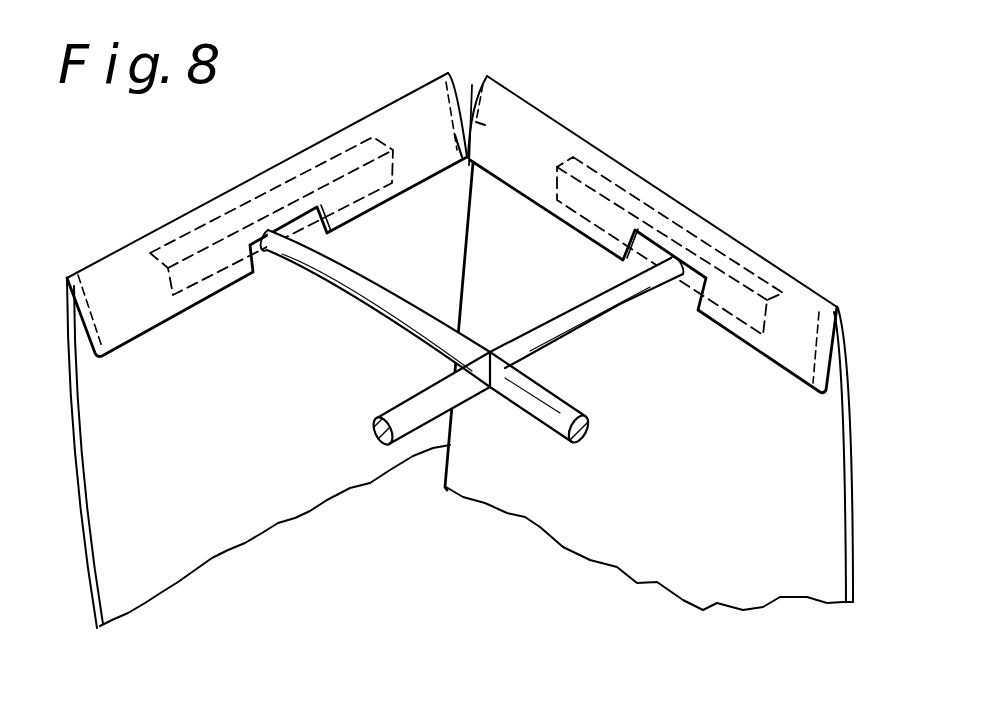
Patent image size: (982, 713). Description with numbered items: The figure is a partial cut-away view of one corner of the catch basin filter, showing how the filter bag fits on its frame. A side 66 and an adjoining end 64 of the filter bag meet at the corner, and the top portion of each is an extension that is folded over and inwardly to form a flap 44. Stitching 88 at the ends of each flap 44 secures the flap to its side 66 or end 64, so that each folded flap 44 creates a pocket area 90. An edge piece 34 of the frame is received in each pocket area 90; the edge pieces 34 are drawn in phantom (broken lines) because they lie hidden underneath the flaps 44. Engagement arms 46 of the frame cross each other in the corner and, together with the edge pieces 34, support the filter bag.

The edge piece 34 is at (258, 208).
The flap 44 is at (403, 125).
The engagement arm 46 is at (360, 288).
The end 64 is at (726, 498).
The side 66 is at (233, 450).
The stitching 88 is at (90, 307).
The pocket area 90 is at (138, 290).